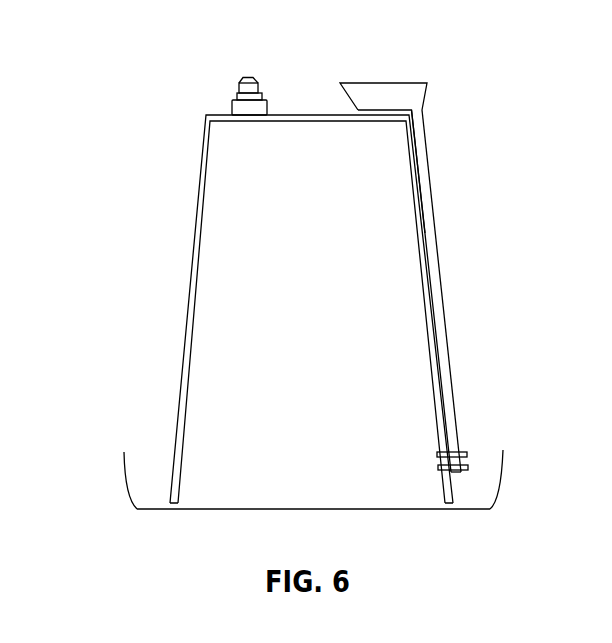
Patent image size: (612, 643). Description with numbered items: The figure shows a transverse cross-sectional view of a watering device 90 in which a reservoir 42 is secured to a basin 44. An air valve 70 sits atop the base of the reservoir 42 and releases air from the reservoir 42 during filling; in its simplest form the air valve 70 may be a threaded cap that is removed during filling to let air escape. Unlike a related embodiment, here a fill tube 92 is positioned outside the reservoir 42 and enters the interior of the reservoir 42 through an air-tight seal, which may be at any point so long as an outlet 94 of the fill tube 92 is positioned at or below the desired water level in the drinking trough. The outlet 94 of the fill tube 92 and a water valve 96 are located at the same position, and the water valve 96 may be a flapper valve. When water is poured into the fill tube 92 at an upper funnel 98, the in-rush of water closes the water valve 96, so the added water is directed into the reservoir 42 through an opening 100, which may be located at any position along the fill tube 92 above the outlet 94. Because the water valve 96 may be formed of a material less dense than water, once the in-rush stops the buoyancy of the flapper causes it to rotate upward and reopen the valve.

The watering device 90 is at (106, 98).
The reservoir 42 is at (187, 313).
The basin 44 is at (123, 482).
The air valve 70 is at (238, 106).
The fill tube 92 is at (449, 317).
The outlet 94 is at (465, 462).
The water valve 96 is at (455, 469).
The upper funnel 98 is at (388, 92).
The opening 100 is at (419, 161).